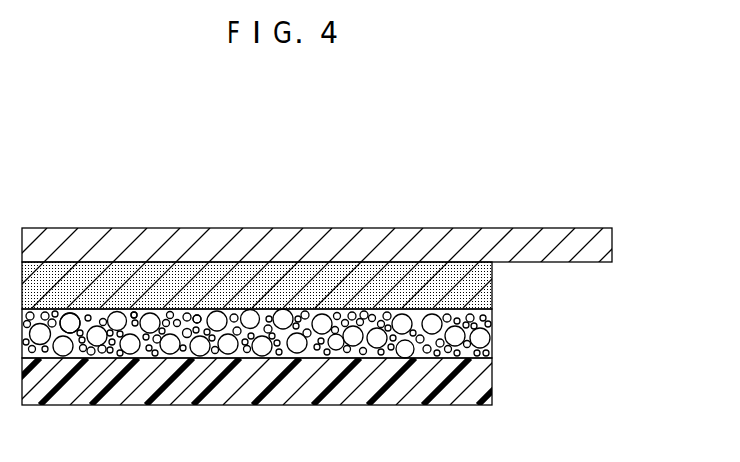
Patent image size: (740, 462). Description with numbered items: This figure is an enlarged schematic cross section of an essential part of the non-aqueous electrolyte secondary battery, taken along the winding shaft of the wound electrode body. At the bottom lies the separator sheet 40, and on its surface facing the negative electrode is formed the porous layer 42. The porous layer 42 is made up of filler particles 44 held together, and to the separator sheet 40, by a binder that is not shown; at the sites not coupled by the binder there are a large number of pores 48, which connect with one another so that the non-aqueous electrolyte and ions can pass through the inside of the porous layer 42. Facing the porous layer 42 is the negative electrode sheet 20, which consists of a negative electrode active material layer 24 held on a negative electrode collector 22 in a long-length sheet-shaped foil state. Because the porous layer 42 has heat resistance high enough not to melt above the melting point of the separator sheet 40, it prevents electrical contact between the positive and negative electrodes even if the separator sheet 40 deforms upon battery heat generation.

The negative electrode sheet 20 is at (365, 268).
The negative electrode collector 22 is at (602, 248).
The negative electrode active material layer 24 is at (492, 288).
The separator sheet 40 is at (492, 380).
The porous layer 42 is at (492, 343).
The filler particles 44 is at (70, 312).
The pores 48 is at (130, 312).